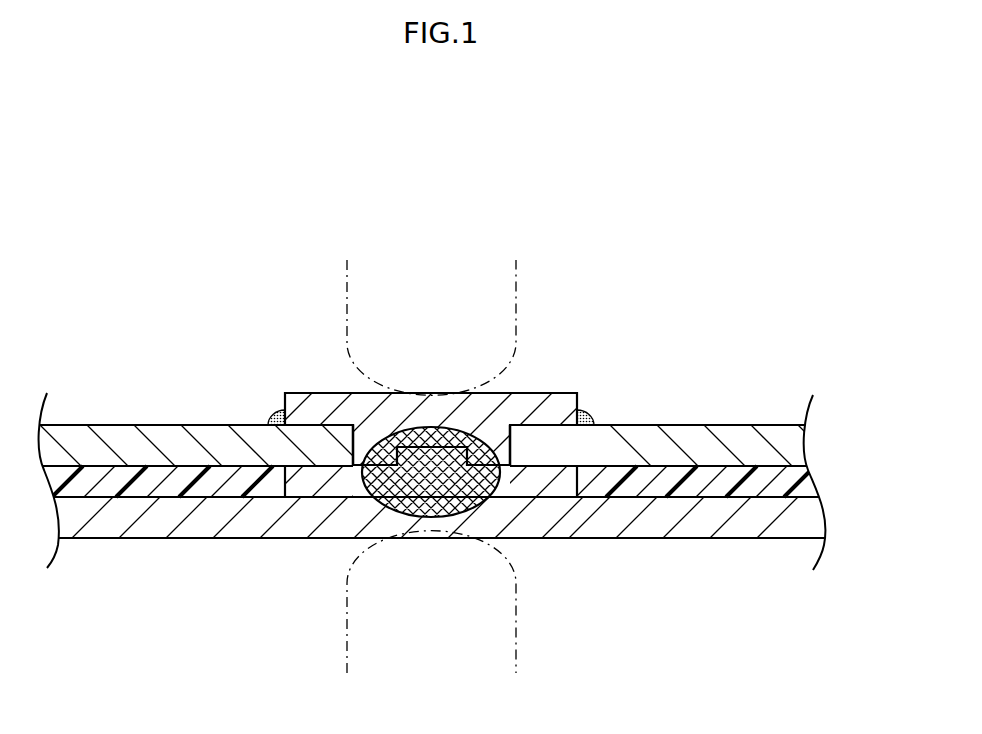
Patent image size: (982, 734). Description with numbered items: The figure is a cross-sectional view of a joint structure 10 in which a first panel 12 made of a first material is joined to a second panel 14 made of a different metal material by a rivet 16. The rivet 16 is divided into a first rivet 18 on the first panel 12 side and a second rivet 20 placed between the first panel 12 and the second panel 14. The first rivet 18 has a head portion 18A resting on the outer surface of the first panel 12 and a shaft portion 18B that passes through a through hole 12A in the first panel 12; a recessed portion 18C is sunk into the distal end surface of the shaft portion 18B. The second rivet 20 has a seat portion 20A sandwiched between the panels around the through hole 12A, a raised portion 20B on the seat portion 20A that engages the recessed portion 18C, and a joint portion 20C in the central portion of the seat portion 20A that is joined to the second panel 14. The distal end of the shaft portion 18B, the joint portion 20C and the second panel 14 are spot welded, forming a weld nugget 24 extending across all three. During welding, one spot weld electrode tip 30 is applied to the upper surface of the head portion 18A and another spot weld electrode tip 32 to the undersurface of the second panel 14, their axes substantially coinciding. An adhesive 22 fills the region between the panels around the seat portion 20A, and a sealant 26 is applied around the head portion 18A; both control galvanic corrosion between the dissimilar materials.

The joint structure 10 is at (657, 337).
The first panel 12 is at (738, 425).
The through hole 12A is at (355, 444).
The second panel 14 is at (703, 539).
The rivet 16 is at (538, 366).
The first rivet 18 is at (562, 394).
The head portion 18A is at (322, 402).
The shaft portion 18B is at (510, 447).
The recessed portion 18C is at (440, 452).
The second rivet 20 is at (535, 481).
The seat portion 20A is at (310, 487).
The raised portion 20B is at (445, 455).
The joint portion 20C is at (407, 488).
The adhesive 22 is at (155, 477).
The weld nugget 24 is at (488, 516).
The sealant 26 is at (273, 417).
The spot weld electrode tip 30 is at (516, 278).
The spot weld electrode tip 32 is at (516, 662).